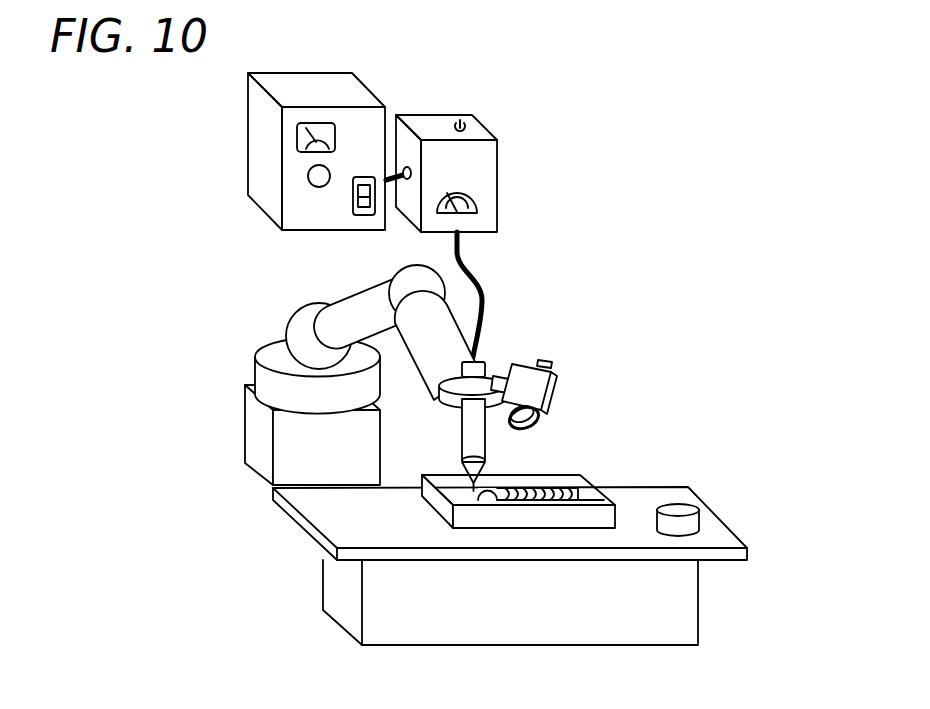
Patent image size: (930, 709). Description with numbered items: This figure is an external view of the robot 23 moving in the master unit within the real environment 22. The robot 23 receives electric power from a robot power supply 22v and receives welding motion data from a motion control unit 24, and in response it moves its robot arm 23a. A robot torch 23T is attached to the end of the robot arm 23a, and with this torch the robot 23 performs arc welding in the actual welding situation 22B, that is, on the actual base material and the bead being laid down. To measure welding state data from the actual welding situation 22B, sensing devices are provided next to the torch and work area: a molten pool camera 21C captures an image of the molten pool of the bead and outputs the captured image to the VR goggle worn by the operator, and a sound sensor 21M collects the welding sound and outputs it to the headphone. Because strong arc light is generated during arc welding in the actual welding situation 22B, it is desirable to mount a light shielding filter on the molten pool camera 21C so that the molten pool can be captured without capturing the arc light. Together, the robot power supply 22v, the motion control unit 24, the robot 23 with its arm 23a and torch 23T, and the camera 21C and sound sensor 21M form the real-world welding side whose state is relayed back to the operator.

The real environment 22 is at (808, 90).
The robot power supply 22v is at (262, 147).
The motion control unit 24 is at (478, 167).
The robot 23 is at (217, 257).
The robot arm 23a is at (433, 348).
The robot torch 23T is at (470, 432).
The molten pool camera 21C is at (528, 373).
The actual welding situation 22B is at (567, 485).
The sound sensor 21M is at (692, 504).